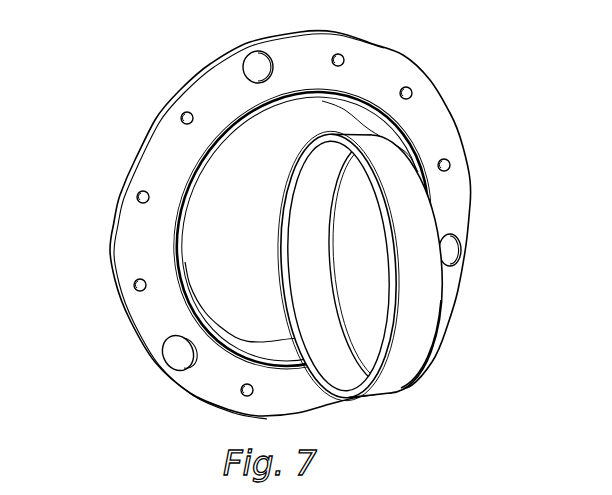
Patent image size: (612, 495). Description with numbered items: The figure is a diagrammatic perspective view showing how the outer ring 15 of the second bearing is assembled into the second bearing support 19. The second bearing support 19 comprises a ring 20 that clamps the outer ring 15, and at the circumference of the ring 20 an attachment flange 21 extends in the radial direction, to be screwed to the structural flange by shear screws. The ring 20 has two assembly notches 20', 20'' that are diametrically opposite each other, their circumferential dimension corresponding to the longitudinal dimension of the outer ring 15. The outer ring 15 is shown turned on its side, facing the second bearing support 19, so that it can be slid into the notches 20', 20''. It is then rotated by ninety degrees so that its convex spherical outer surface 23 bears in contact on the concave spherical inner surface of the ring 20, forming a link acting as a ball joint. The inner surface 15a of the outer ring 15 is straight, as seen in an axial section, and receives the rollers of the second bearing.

The second bearing support 19 is at (457, 77).
The attachment flange 21 is at (133, 250).
The ring 20 is at (272, 229).
The assembly notch 20' is at (302, 207).
The assembly notch 20'' is at (207, 345).
The outer ring 15 is at (408, 202).
The inner surface 15a is at (331, 368).
The outer surface 23 is at (413, 353).